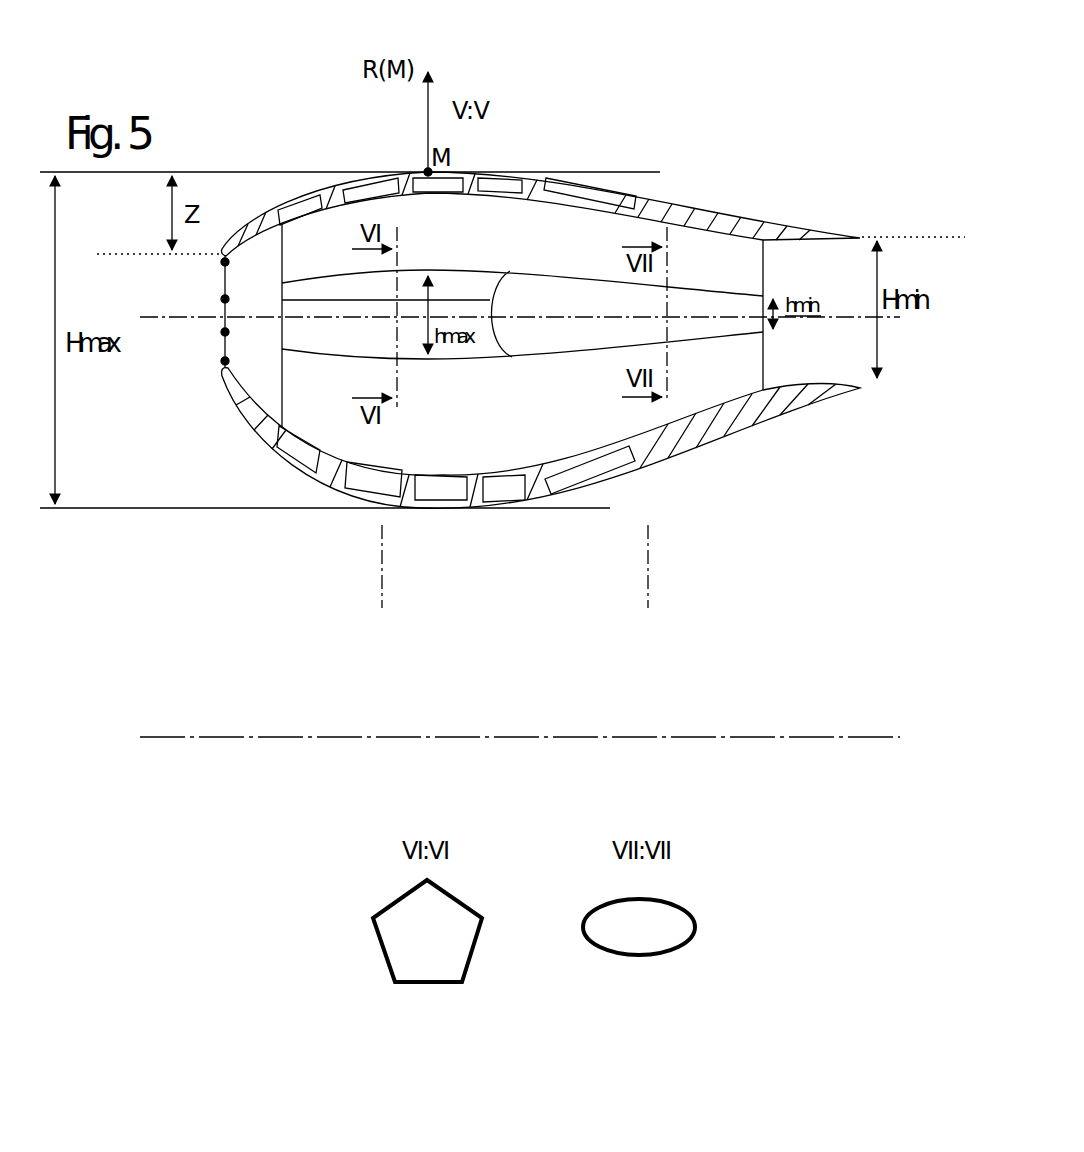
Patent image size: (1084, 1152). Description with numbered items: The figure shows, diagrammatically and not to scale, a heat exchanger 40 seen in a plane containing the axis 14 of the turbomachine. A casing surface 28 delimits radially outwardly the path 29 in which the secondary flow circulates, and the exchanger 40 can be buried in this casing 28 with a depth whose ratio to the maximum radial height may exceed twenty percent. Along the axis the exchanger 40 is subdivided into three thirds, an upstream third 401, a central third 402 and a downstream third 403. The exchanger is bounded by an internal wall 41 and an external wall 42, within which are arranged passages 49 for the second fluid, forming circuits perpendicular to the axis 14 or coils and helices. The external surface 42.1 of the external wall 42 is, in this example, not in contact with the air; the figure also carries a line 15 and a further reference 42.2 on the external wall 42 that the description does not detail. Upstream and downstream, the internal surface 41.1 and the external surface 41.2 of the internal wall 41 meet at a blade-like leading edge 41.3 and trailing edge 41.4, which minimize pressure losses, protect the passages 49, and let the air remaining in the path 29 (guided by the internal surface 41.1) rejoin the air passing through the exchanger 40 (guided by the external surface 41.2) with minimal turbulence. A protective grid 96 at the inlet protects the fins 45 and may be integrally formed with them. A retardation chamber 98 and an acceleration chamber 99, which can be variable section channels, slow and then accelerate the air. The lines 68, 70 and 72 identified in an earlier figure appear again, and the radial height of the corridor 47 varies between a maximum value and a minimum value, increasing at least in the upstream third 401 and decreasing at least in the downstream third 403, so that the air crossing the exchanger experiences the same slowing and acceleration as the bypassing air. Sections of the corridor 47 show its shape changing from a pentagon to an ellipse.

The axis 14 is at (250, 736).
The center line of stator vane assembly 15 is at (168, 316).
The casing surface 28 is at (144, 235).
The path 29 is at (144, 298).
The exchanger 40 is at (693, 88).
The internal wall 41 is at (690, 442).
The internal surface 41.1 is at (567, 500).
The external surface 41.2 is at (465, 470).
The leading edge 41.3 is at (216, 373).
The trailing edge 41.4 is at (865, 388).
The external wall 42 is at (654, 200).
The external surface of the external wall 42.1 is at (708, 200).
The second vane inner wall 42.2 is at (713, 228).
The fins 45 is at (381, 950).
The corridor 47 is at (586, 310).
The passages 49 is at (600, 196).
The line 68 is at (590, 278).
The line 70 is at (380, 302).
The line 72 is at (580, 352).
The protective grid 96 is at (223, 350).
The retardation chamber 98 is at (273, 355).
The acceleration chamber 99 is at (841, 367).
The upstream third 401 is at (297, 511).
The central third 402 is at (527, 516).
The downstream third 403 is at (727, 494).